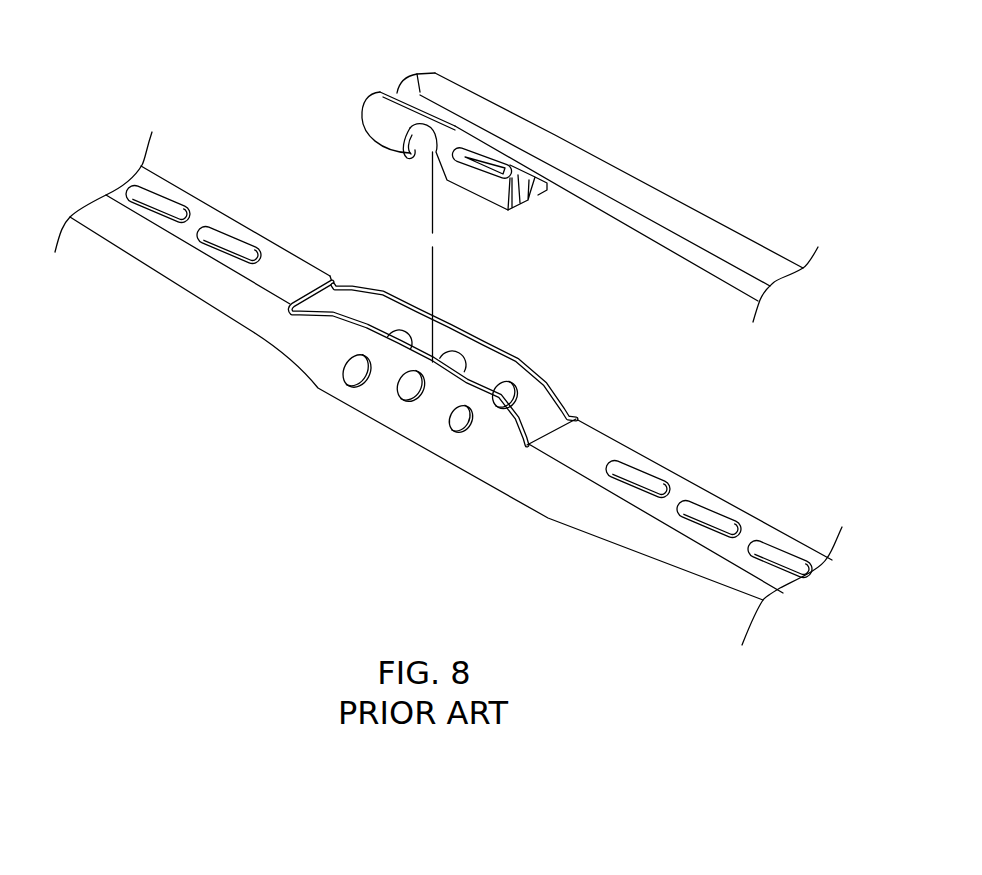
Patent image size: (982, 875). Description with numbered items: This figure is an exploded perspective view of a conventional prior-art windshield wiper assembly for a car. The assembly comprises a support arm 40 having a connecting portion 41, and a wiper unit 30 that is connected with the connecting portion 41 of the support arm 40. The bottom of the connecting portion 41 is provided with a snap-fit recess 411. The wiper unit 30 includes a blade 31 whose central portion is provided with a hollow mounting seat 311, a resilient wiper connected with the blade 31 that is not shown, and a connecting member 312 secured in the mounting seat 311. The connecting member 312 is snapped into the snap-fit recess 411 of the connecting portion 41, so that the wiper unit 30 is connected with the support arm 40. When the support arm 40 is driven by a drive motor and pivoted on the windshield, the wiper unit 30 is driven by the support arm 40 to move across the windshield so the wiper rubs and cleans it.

The wiper unit 30 is at (715, 478).
The blade 31 is at (608, 448).
The hollow mounting seat 311 is at (418, 342).
The connecting member 312 is at (450, 358).
The support arm 40 is at (477, 107).
The connecting portion 41 is at (388, 118).
The snap-fit recess 411 is at (427, 142).